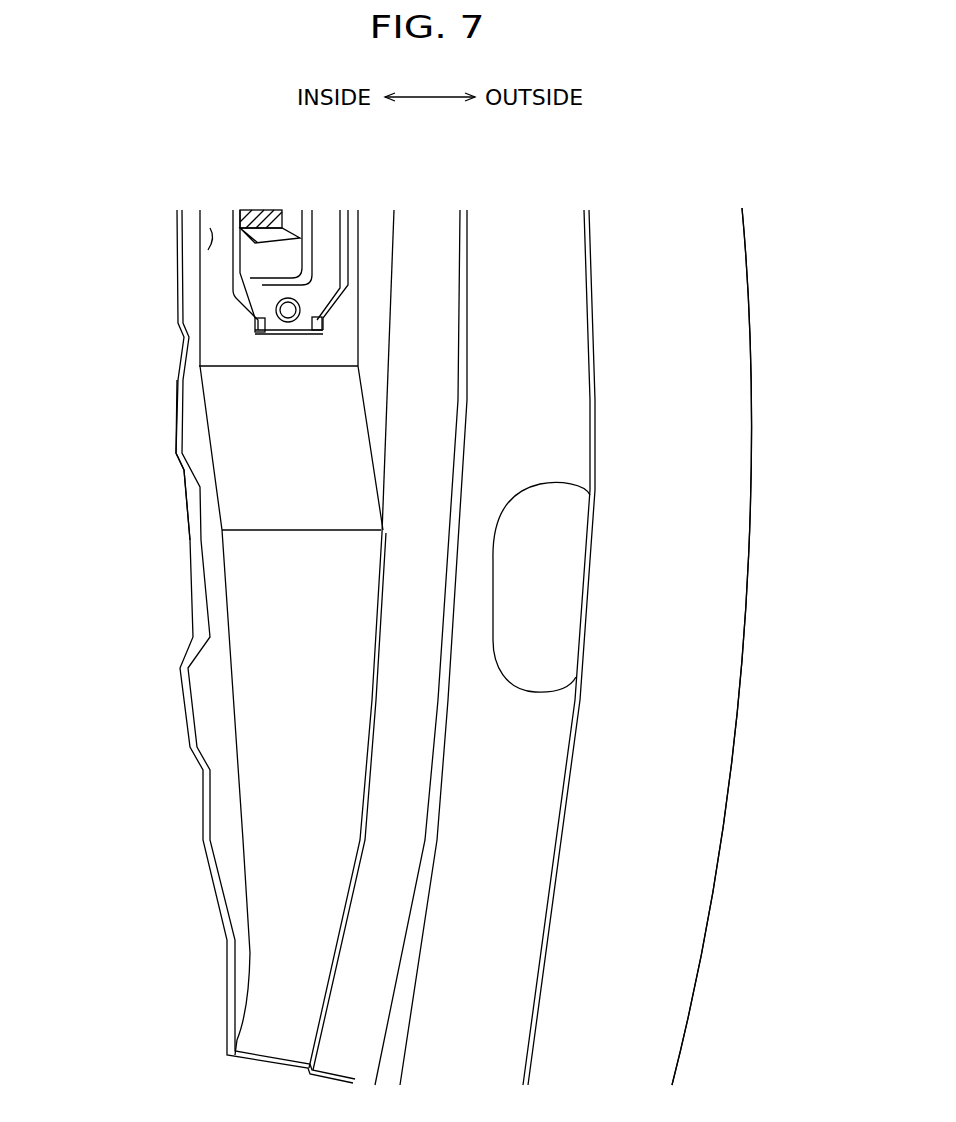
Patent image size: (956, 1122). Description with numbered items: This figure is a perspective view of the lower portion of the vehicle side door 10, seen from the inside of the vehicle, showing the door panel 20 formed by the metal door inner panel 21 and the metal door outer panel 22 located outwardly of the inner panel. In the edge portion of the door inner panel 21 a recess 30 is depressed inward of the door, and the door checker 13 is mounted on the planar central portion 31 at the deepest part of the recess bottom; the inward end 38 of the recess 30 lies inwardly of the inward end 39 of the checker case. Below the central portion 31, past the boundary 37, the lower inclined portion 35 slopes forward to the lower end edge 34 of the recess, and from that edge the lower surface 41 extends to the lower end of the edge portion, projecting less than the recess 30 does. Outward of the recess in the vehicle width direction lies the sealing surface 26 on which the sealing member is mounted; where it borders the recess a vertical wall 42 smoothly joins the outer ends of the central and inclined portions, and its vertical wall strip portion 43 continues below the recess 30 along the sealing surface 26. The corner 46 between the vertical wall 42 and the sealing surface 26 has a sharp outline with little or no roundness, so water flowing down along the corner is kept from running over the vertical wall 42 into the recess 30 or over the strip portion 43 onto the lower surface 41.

The vehicle side door 10 is at (588, 172).
The door checker 13 is at (235, 262).
The door panel 20 is at (615, 228).
The door inner panel 21 is at (203, 587).
The door outer panel 22 is at (588, 347).
The sealing surface 26 is at (432, 420).
The recess 30 is at (229, 240).
The central portion 31 is at (217, 343).
The lower end edge 34 is at (273, 527).
The lower inclined portion 35 is at (233, 427).
The boundary 37 is at (252, 368).
The inward end of the recess 38 is at (212, 233).
The inward end of the case 39 is at (232, 282).
The lower surface 41 is at (277, 767).
The vertical wall 42 is at (372, 298).
The vertical wall strip portion 43 is at (367, 763).
The corner 46 is at (390, 448).